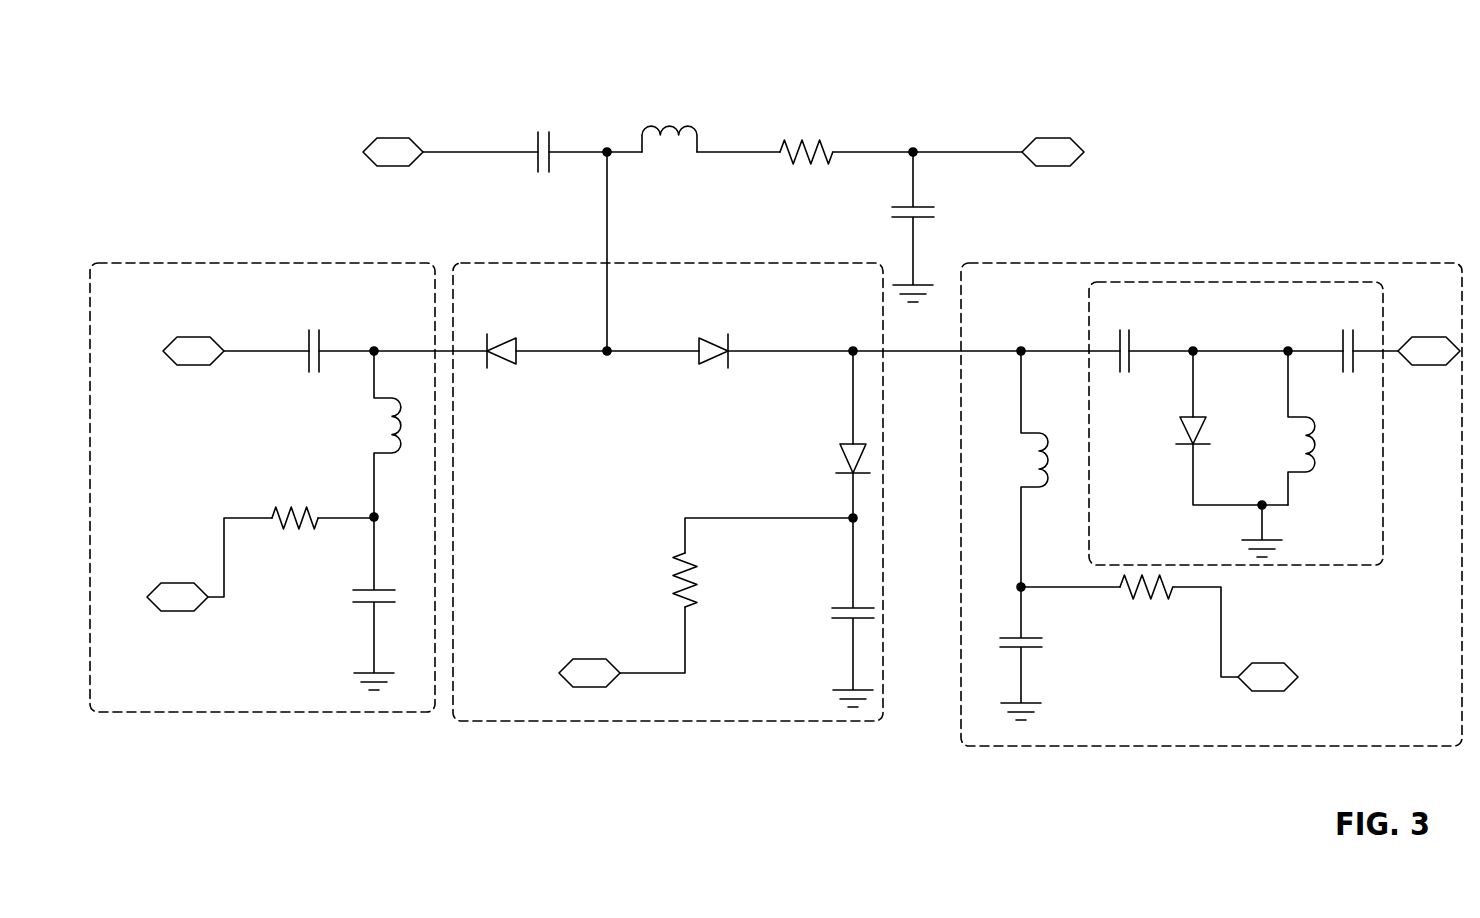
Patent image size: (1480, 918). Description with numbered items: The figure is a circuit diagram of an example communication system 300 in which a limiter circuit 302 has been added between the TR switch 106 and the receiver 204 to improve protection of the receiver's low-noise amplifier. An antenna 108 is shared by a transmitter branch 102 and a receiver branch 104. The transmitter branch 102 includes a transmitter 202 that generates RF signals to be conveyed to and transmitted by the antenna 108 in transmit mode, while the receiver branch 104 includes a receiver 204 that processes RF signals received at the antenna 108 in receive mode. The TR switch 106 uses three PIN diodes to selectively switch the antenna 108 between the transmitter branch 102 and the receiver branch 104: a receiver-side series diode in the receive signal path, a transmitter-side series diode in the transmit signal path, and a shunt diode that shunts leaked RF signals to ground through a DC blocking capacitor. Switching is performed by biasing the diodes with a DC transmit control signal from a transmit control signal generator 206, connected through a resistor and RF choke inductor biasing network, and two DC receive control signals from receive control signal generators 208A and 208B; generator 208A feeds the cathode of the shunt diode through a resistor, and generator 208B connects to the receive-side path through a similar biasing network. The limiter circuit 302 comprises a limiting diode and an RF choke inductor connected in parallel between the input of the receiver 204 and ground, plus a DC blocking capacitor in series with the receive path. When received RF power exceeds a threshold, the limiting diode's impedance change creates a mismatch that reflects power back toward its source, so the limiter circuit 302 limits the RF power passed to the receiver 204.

The communication system 300 is at (243, 70).
The transmitter branch 102 is at (213, 263).
The TR switch 106 is at (523, 263).
The receiver branch 104 is at (1125, 263).
The limiter circuit 302 is at (1210, 282).
The antenna 108 is at (377, 167).
The transmitter 202 is at (195, 365).
The receiver 204 is at (1412, 338).
The transmit control signal generator 206 is at (185, 612).
The receive control signal generator 208A is at (580, 688).
The receive control signal generator 208B is at (1285, 691).